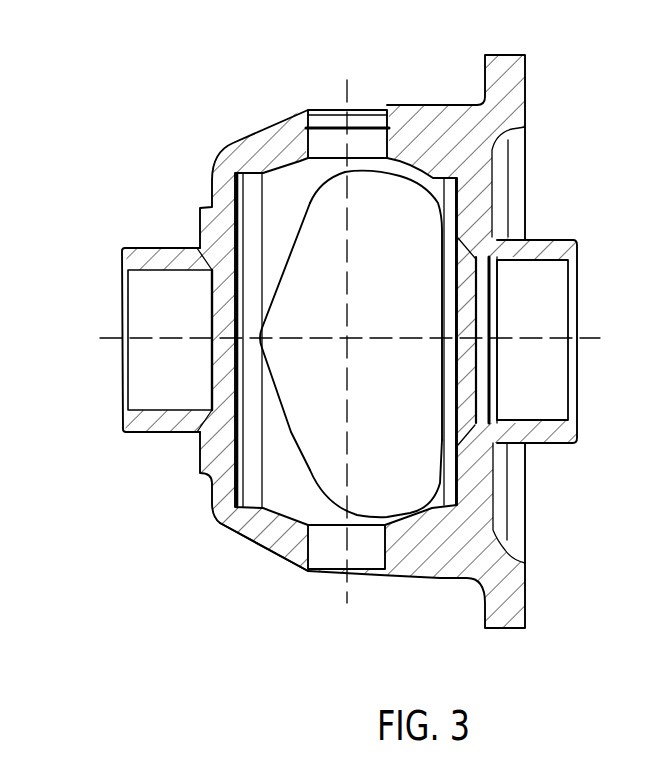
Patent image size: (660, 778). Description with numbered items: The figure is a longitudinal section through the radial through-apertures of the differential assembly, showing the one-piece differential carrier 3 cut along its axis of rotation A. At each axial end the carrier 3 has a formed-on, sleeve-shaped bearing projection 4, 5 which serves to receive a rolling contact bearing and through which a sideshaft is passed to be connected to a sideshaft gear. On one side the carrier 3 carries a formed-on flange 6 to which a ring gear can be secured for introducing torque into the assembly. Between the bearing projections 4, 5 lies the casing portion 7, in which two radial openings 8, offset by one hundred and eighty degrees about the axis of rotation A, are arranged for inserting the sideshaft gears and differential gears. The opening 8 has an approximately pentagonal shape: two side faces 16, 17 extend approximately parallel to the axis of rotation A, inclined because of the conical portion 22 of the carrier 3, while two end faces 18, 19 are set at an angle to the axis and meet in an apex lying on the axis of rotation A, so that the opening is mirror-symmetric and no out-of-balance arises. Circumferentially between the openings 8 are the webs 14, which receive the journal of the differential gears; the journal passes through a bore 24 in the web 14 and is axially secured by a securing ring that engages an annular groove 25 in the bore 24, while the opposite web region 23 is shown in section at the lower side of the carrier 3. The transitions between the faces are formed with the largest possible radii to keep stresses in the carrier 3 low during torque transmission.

The differential carrier 3 is at (350, 326).
The bearing projection 4 is at (545, 243).
The bearing projection 5 is at (152, 247).
The flange 6 is at (517, 79).
The casing portion 7 is at (453, 102).
The radial opening 8 is at (400, 307).
The web 14 is at (412, 112).
The side face 16 is at (375, 511).
The side face 17 is at (375, 173).
The end face 18 is at (291, 433).
The end face 19 is at (288, 248).
The conical portion 22 is at (257, 545).
The lower closure plug 23 is at (312, 551).
The bore 24 is at (320, 140).
The annular groove 25 is at (368, 107).
The axis of rotation A is at (593, 338).